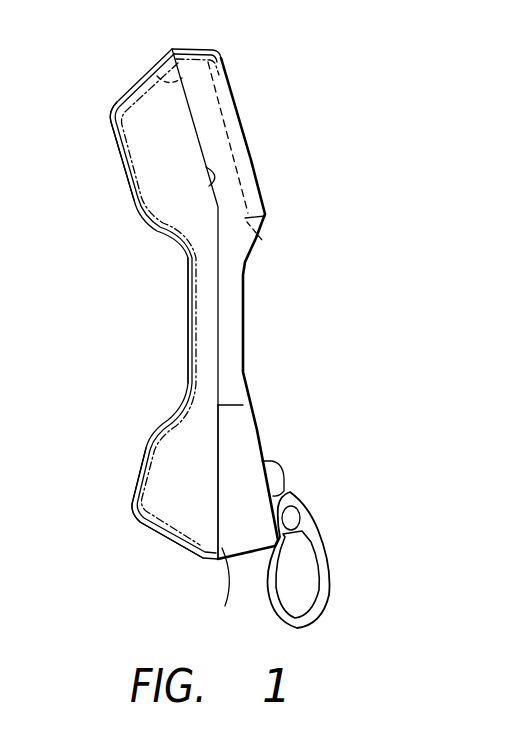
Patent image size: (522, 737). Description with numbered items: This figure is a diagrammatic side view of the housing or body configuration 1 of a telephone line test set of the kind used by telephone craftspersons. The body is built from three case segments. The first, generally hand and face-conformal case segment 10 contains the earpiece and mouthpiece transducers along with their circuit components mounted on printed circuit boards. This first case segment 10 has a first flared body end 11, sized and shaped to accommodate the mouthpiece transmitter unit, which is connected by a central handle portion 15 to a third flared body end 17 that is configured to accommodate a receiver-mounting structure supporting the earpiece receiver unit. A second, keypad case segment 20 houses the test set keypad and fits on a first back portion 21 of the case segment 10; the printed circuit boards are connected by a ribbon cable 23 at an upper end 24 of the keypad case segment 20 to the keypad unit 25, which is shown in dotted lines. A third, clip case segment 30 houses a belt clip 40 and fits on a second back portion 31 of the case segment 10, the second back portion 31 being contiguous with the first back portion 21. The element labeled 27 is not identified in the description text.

The housing or body configuration of a telephone line test set 1 is at (356, 97).
The first case segment 10 is at (122, 107).
The first flared body end 11 is at (142, 473).
The central handle portion 15 is at (190, 322).
The third flared body end 17 is at (133, 156).
The keypad case segment 20 is at (245, 280).
The first back portion 21 is at (213, 186).
The ribbon cable 23 is at (196, 50).
The upper end 24 is at (165, 82).
The keypad unit 25 is at (242, 167).
The notch 27 is at (252, 233).
The clip case segment 30 is at (252, 428).
The second back portion 31 is at (214, 587).
The belt clip 40 is at (330, 566).